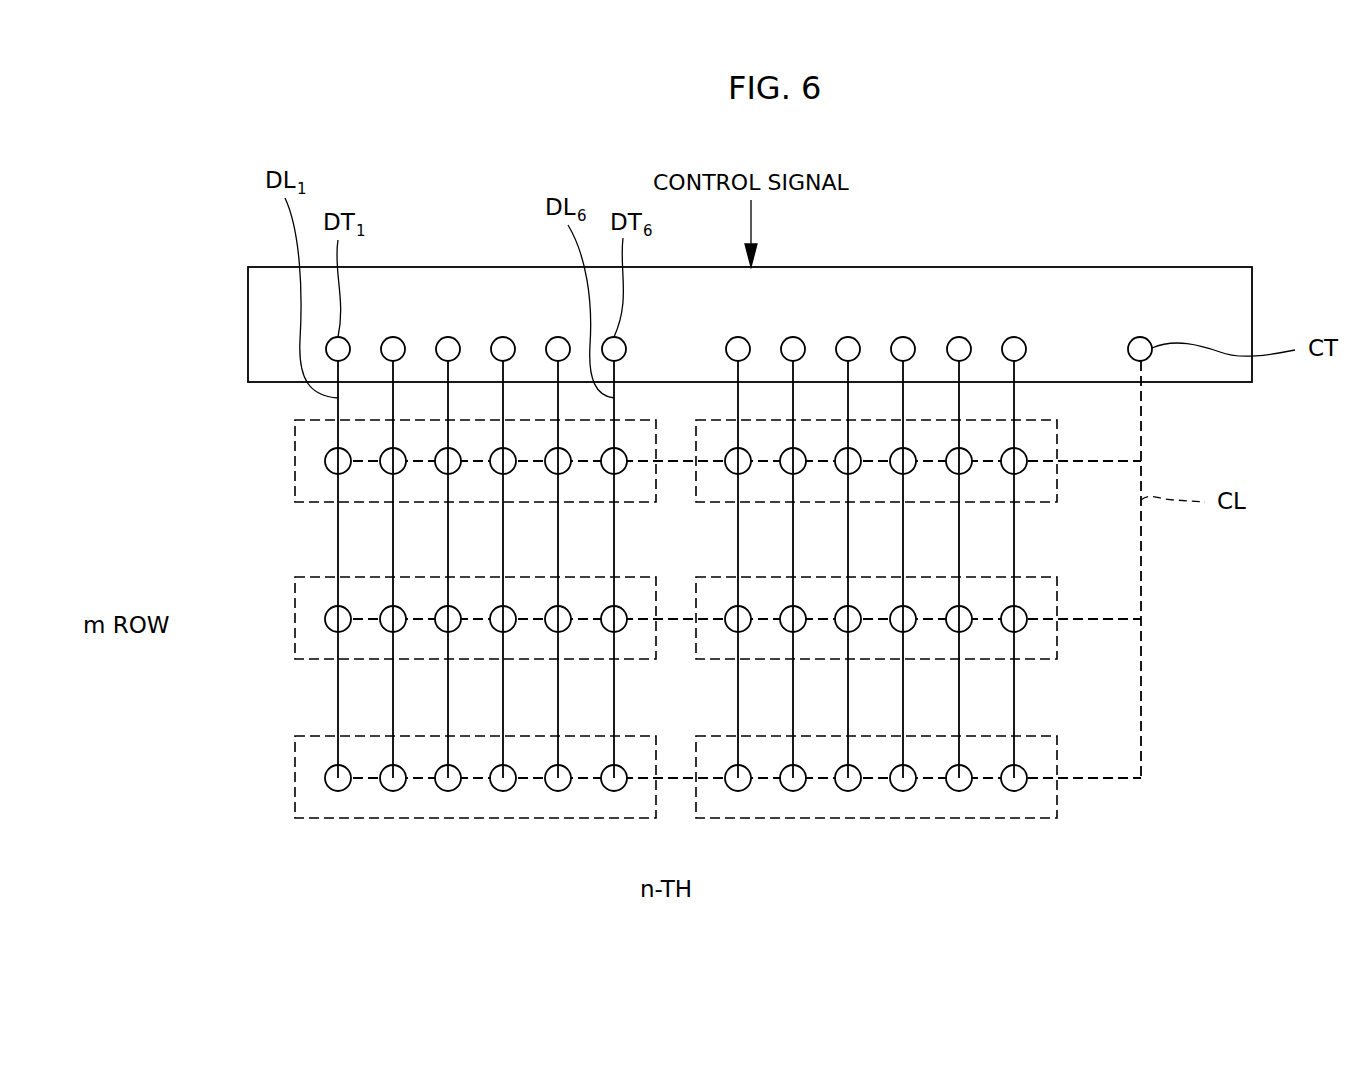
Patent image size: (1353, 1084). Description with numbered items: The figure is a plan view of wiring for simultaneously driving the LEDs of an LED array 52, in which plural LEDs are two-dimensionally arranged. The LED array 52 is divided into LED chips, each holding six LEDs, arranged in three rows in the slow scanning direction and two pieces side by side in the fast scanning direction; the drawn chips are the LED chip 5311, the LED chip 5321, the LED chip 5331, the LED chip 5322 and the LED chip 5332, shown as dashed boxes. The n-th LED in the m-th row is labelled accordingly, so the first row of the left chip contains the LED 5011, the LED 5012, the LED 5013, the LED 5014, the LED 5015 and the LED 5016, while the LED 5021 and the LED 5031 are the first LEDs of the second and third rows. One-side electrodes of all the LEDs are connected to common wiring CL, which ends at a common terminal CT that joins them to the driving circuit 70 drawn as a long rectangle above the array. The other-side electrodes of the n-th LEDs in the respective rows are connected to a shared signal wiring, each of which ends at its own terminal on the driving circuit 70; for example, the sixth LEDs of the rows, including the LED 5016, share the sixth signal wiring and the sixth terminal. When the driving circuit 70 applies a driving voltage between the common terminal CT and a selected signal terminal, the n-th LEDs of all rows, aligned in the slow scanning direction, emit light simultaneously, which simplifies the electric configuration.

The driving circuit 70 is at (1086, 285).
The LED array 52 is at (1010, 832).
The LED chip 5311 is at (278, 443).
The LED chip 5321 is at (1185, 432).
The LED chip 5331 is at (277, 757).
The LED chip 5322 is at (1045, 578).
The LED chip 5332 is at (1042, 735).
The LED 5011 is at (329, 470).
The LED 5012 is at (384, 471).
The LED 5013 is at (439, 471).
The LED 5014 is at (494, 471).
The LED 5015 is at (549, 471).
The LED 5016 is at (605, 471).
The LED 5021 is at (329, 628).
The LED 5031 is at (329, 787).